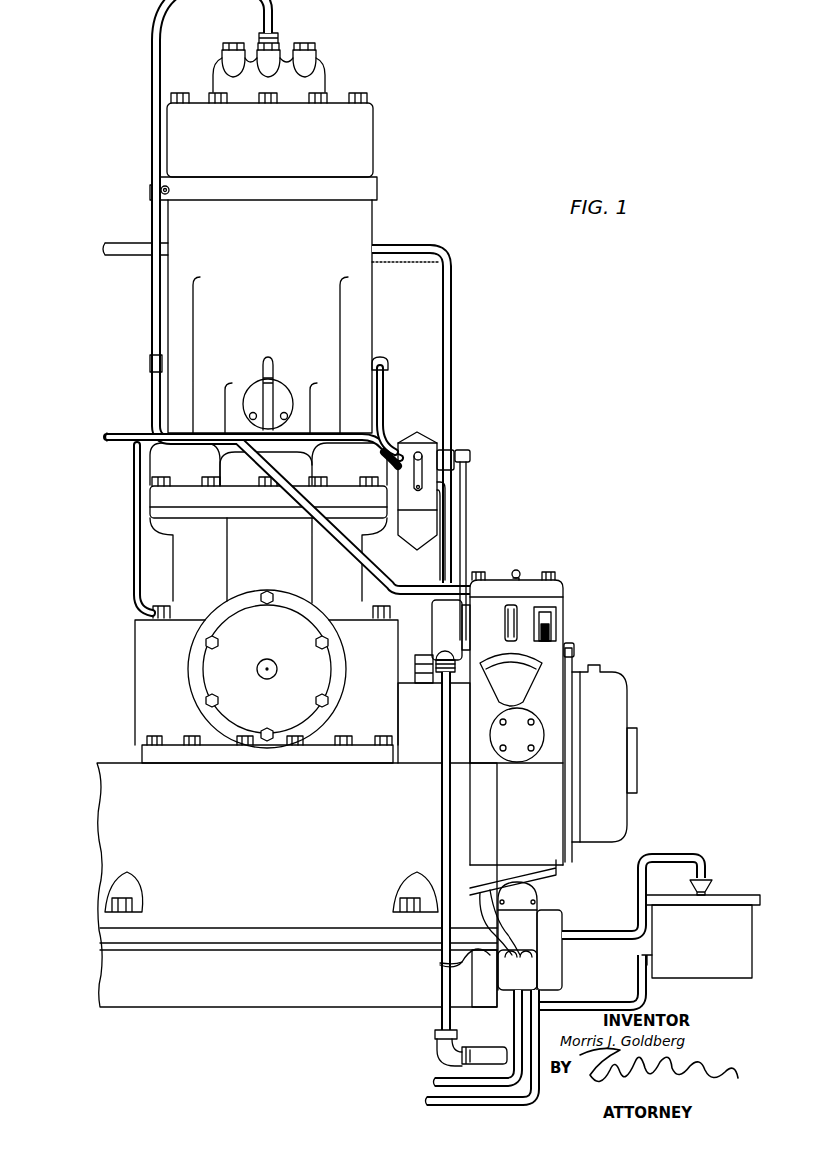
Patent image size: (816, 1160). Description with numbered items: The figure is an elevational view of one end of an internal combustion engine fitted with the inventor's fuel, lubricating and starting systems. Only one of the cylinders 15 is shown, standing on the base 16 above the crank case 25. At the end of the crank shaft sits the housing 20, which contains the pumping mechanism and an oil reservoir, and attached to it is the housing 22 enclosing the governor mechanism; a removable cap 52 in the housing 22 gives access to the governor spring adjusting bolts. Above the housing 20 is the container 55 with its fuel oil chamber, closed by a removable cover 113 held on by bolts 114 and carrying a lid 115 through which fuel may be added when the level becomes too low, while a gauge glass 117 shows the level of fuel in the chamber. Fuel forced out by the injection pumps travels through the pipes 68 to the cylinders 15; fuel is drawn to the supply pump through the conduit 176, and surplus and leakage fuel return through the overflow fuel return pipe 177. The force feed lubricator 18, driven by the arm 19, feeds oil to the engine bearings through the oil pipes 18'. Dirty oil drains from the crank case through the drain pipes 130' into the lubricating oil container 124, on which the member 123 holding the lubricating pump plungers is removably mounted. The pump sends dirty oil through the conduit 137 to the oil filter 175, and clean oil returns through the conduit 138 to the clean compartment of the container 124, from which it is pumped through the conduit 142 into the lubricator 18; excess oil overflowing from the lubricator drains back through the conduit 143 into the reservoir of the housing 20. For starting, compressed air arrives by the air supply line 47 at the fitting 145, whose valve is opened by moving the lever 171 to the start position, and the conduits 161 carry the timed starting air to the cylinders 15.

The cylinders 15 is at (271, 233).
The base 16 is at (297, 885).
The force feed lubricator 18 is at (419, 478).
The oil pipes 18' is at (260, 445).
The arm 19 is at (467, 500).
The housing 20 is at (555, 862).
The housing 22 is at (625, 810).
The crank case 25 is at (143, 681).
The air supply line 47 is at (446, 783).
The removable cap 52 is at (580, 672).
The container 55 is at (518, 608).
The pipes 68 is at (152, 75).
The removable cover 113 is at (557, 588).
The bolts 114 is at (480, 578).
The lid 115 is at (518, 578).
The gauge glass 117 is at (556, 623).
The member 123 is at (540, 957).
The lubricating oil container 124 is at (562, 950).
The drain pipes 130' is at (480, 933).
The conduit 137 is at (582, 937).
The conduit 138 is at (647, 994).
The conduit 142 is at (440, 963).
The conduit 143 is at (450, 536).
The fitting 145 is at (435, 623).
The conduits 161 is at (453, 315).
The lever 171 is at (563, 597).
The oil filter 175 is at (702, 929).
The conduit 176 is at (437, 1084).
The overflow fuel return pipe 177 is at (430, 1102).